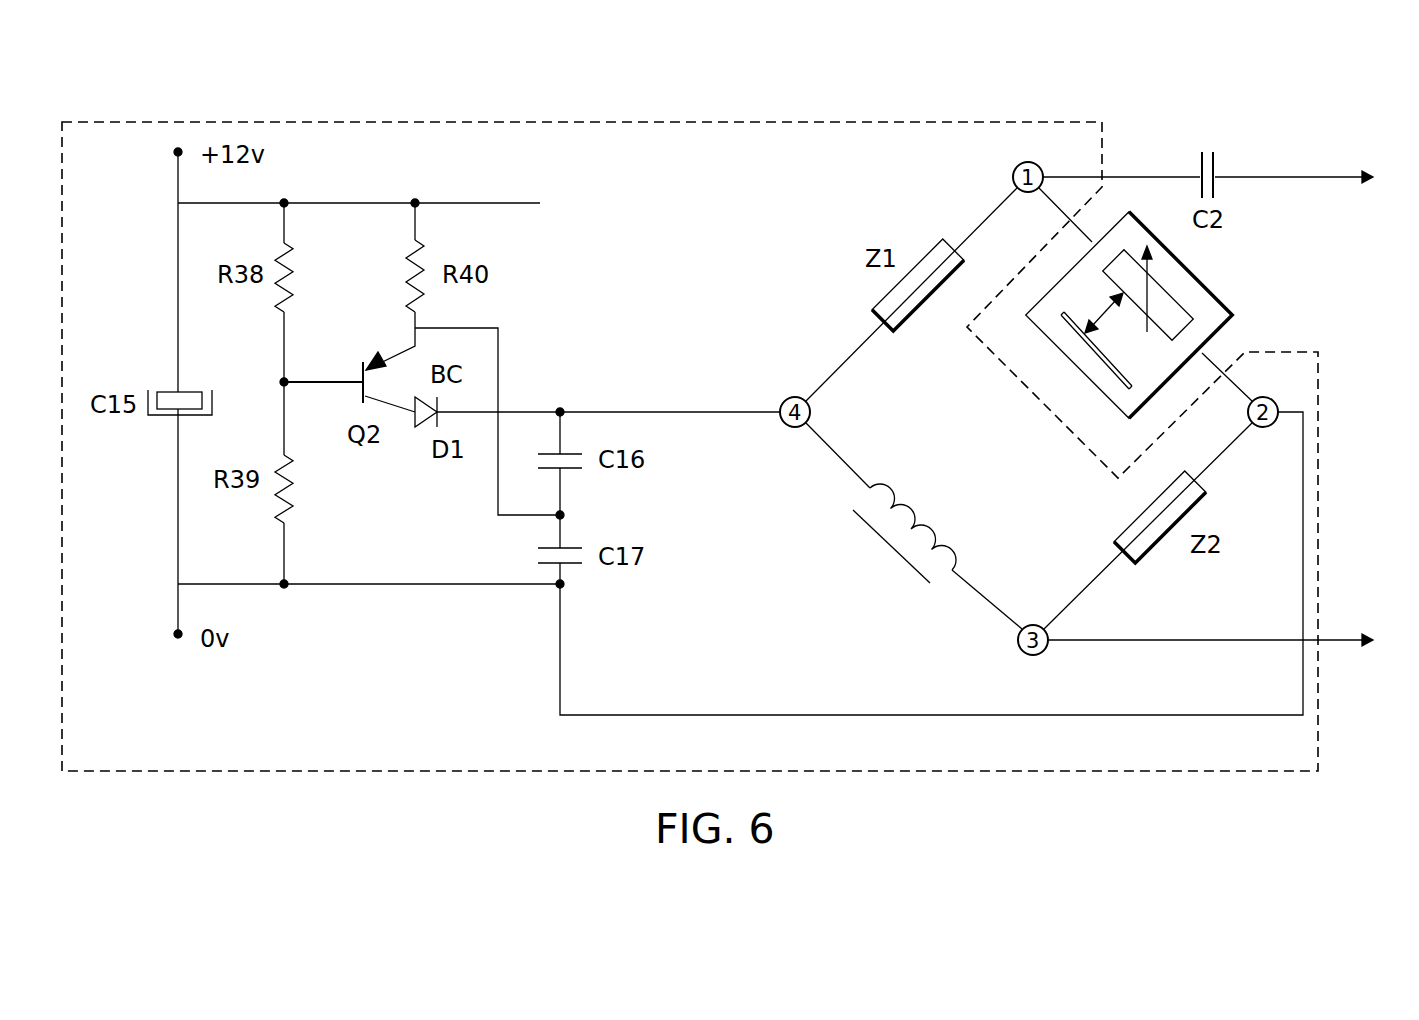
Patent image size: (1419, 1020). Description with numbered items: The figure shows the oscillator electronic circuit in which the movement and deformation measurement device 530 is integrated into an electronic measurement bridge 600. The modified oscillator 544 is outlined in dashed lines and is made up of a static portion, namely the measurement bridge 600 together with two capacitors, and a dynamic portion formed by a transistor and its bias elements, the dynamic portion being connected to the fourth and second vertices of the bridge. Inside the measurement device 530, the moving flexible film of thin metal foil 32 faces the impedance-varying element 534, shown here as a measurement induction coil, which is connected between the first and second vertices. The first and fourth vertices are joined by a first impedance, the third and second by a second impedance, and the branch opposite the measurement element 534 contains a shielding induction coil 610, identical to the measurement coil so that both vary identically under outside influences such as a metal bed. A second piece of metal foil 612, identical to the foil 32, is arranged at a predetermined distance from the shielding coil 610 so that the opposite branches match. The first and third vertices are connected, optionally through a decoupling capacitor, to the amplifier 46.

The oscillator 544 is at (390, 120).
The amplifier device 46 is at (1231, 408).
The measurement bridge 600 is at (914, 534).
The shielding induction coil 610 is at (893, 532).
The second piece of metal foil 612 is at (903, 561).
The measurement device 530 is at (1129, 305).
The impedance-varying element 534 is at (1186, 307).
The flexible thin metal foil 32 is at (1105, 362).